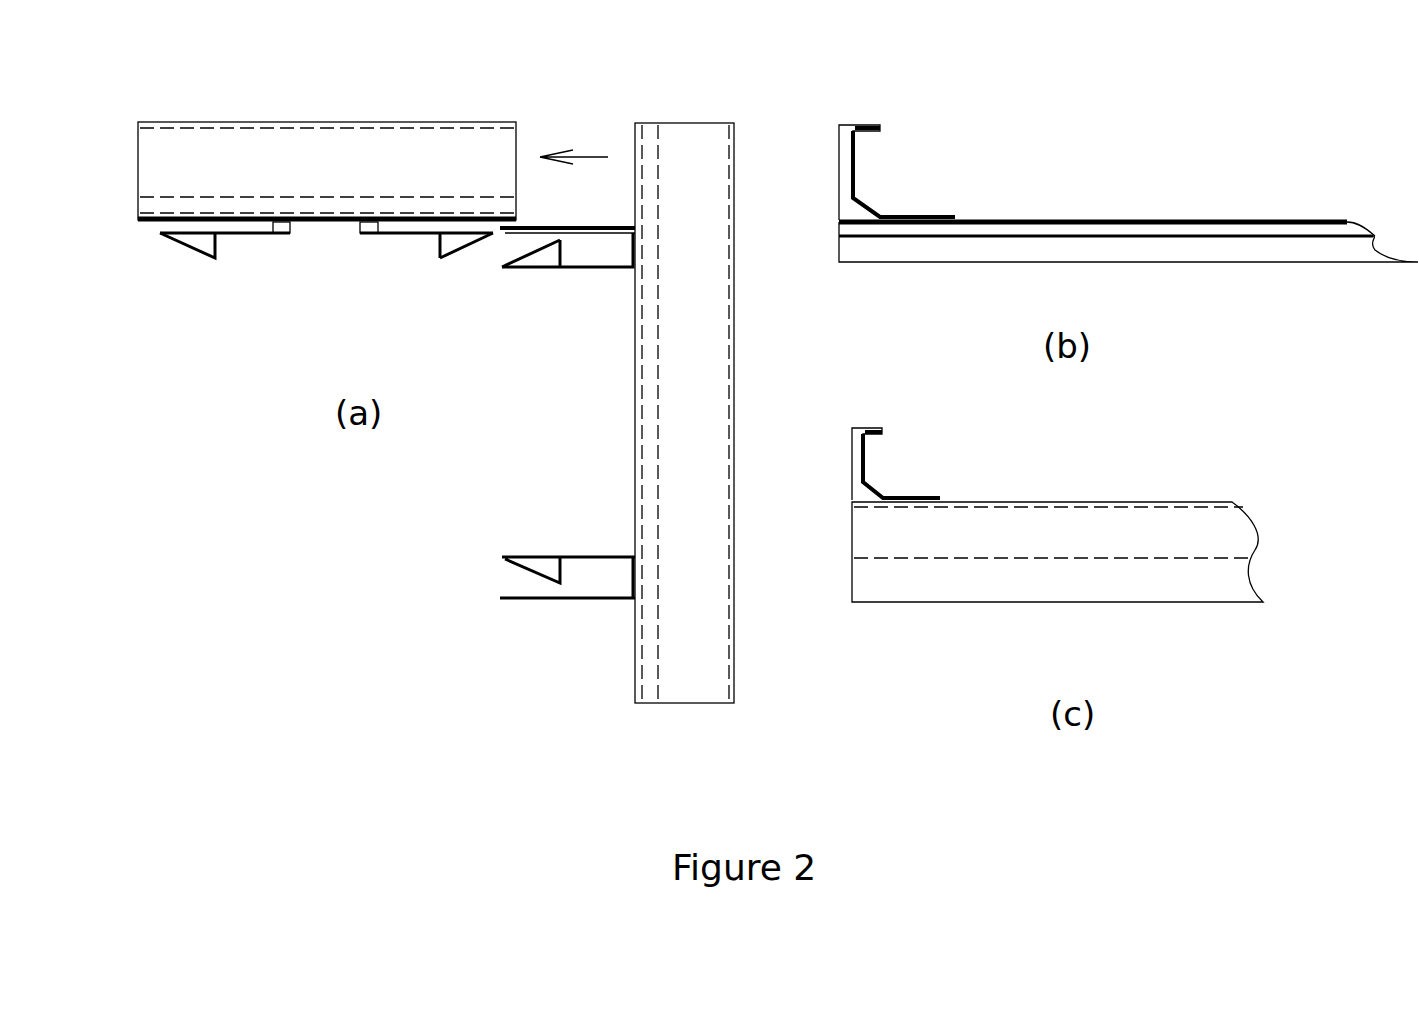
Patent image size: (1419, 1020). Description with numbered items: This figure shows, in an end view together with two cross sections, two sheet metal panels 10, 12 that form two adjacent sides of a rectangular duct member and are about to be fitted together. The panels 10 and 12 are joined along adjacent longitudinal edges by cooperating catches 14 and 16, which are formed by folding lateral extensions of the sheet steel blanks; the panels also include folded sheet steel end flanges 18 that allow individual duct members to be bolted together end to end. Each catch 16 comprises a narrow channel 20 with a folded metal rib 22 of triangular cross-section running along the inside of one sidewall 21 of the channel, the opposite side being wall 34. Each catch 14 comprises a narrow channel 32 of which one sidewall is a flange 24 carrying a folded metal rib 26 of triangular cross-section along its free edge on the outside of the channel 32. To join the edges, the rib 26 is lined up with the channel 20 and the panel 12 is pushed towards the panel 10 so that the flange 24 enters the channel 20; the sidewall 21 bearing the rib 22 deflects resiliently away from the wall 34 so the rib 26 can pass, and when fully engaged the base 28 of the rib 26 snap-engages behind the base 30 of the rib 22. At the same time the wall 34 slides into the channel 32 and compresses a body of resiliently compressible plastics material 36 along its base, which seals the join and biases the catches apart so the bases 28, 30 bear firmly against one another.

The sheet metal panel 10 is at (330, 215).
The sheet metal panel 12 is at (635, 408).
The catch 14 is at (789, 276).
The catch 16 is at (824, 420).
The end flange 18 is at (278, 138).
The channel 20 is at (538, 240).
The sidewall 21 is at (596, 271).
The folded metal rib 22 is at (520, 270).
The flange 24 is at (400, 235).
The folded metal rib 26 is at (466, 246).
The base of rib 28 is at (438, 240).
The base of rib 30 is at (562, 251).
The channel 32 is at (248, 235).
The wall 34 is at (572, 226).
The resiliently compressible plastics material 36 is at (365, 230).